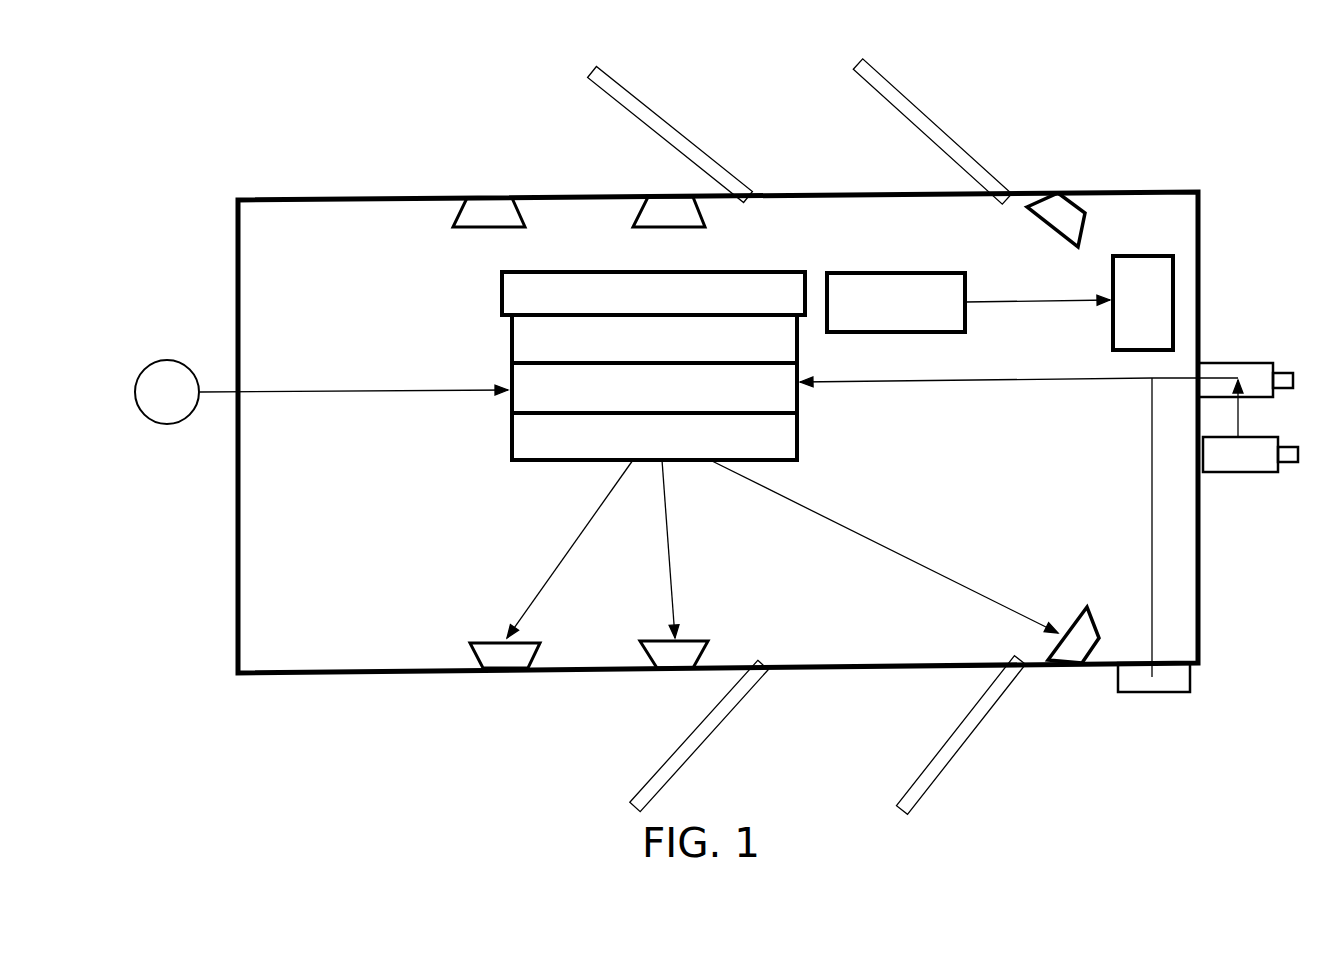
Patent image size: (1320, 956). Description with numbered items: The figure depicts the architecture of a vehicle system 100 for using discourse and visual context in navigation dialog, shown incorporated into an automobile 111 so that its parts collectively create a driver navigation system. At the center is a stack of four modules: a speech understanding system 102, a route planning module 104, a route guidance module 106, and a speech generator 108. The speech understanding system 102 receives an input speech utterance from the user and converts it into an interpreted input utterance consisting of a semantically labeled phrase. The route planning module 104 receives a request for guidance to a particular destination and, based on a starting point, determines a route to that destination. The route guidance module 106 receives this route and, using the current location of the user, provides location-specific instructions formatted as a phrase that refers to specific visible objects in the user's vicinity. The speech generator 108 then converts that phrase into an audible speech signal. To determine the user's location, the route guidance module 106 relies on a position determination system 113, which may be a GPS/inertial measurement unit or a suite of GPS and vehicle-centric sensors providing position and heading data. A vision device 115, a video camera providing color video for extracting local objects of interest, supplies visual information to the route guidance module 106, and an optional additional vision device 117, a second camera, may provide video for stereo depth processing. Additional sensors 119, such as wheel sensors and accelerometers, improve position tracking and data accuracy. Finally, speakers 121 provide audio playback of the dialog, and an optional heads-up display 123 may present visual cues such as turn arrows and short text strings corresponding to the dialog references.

The vehicle system 100 is at (242, 155).
The automobile 111 is at (427, 197).
The speech understanding system 102 is at (500, 292).
The route planning module 104 is at (510, 340).
The route guidance module 106 is at (800, 397).
The speech generator 108 is at (510, 435).
The position determination system 113 is at (163, 423).
The vision device 115 is at (1248, 363).
The additional vision device 117 is at (1230, 472).
The additional sensors 119 is at (1180, 692).
The speakers 121 is at (698, 641).
The heads-up display 123 is at (1113, 330).